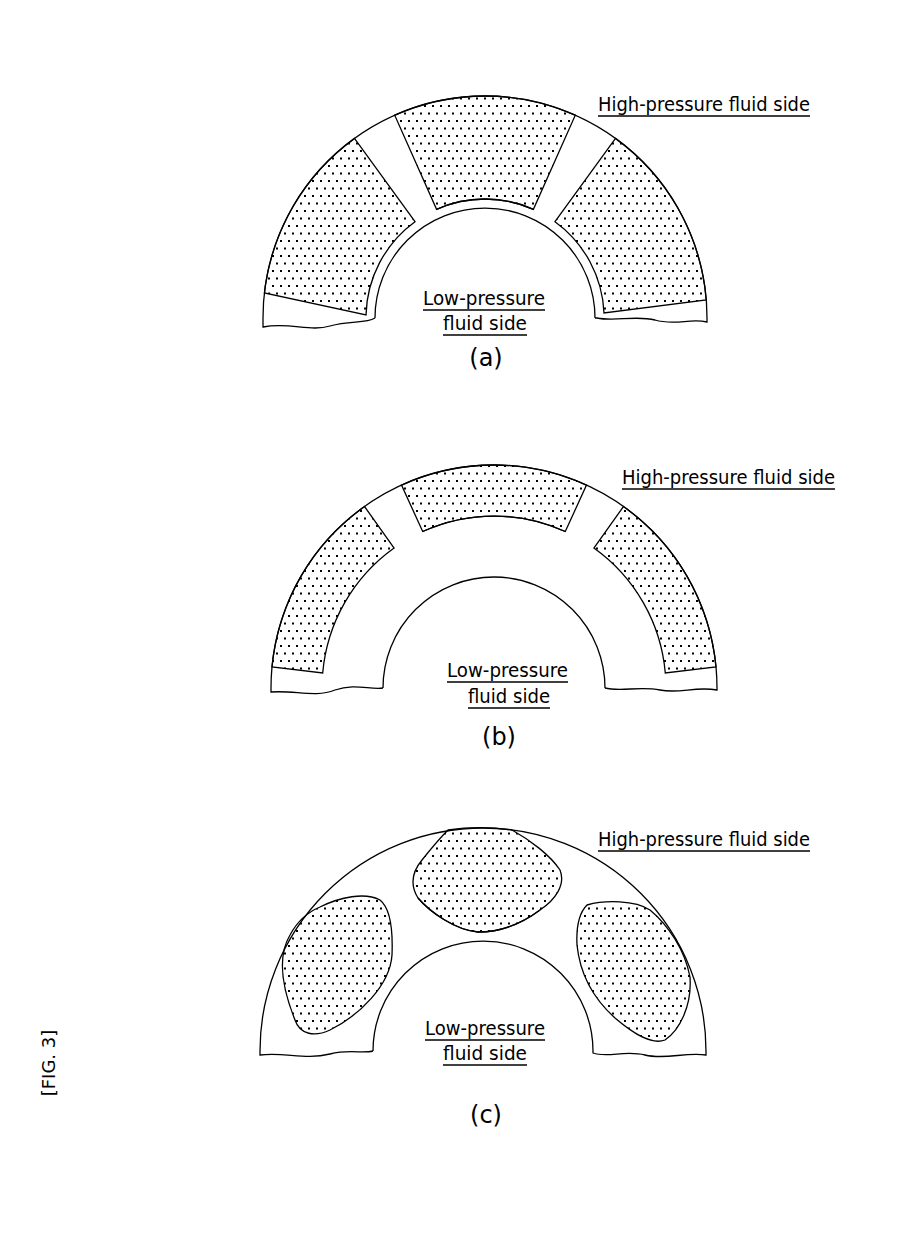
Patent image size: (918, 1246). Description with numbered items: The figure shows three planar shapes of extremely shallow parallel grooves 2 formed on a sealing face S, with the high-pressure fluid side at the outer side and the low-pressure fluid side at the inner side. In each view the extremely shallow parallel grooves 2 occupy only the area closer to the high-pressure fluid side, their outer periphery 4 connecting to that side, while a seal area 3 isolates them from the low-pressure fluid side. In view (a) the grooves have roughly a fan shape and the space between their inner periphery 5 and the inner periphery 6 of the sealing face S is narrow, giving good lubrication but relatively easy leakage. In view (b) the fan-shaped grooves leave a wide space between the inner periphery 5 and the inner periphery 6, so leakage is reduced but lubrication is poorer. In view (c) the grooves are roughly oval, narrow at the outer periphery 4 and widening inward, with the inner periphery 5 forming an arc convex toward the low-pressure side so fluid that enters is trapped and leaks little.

The sealing face S is at (484, 558).
The extremely shallow parallel grooves 2 is at (492, 104).
The seal area 3 is at (488, 568).
The outer periphery 4 is at (424, 100).
The inner periphery 5 is at (443, 212).
The inner periphery 6 is at (393, 272).